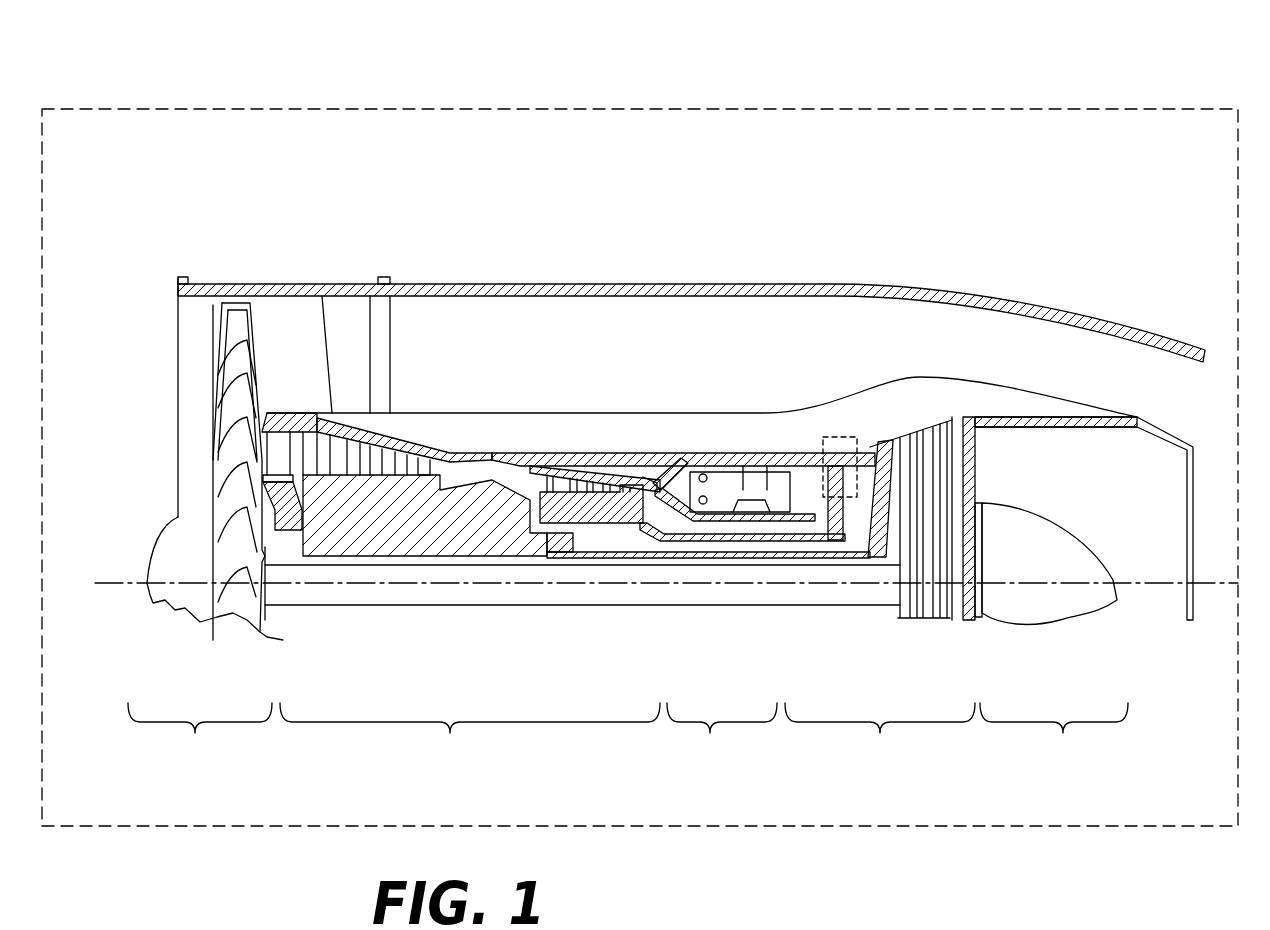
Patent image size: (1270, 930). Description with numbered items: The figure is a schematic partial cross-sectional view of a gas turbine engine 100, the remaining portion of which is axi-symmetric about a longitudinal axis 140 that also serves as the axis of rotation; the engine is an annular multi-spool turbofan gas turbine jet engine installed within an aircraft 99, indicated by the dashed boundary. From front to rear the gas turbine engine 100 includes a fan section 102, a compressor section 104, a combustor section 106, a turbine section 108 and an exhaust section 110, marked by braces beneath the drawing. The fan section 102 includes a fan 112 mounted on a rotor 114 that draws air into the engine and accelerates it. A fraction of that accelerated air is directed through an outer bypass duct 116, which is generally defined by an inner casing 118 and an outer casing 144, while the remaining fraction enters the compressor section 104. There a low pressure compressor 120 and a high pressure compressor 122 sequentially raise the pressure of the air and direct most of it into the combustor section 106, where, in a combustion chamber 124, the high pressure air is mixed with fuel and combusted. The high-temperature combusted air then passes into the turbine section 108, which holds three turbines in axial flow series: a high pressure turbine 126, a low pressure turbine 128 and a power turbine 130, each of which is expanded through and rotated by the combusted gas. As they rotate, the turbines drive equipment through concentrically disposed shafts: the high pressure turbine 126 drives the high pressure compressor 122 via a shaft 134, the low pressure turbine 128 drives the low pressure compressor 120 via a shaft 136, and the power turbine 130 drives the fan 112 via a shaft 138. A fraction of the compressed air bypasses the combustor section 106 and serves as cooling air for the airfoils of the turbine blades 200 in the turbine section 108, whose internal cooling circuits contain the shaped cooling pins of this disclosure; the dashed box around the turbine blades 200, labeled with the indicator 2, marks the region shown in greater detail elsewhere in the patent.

The aircraft 99 is at (1128, 109).
The gas turbine engine 100 is at (416, 227).
The fan section 102 is at (200, 739).
The compressor section 104 is at (470, 739).
The combustor section 106 is at (722, 739).
The turbine section 108 is at (880, 739).
The exhaust section 110 is at (1054, 739).
The fan 112 is at (233, 413).
The rotor 114 is at (270, 626).
The outer bypass duct 116 is at (577, 312).
The inner casing 118 is at (462, 414).
The low pressure compressor 120 is at (382, 550).
The high pressure compressor 122 is at (590, 524).
The combustion chamber 124 is at (789, 455).
The high pressure turbine 126 is at (826, 484).
The low pressure turbine 128 is at (894, 448).
The power turbine 130 is at (952, 507).
The shaft 134 is at (690, 543).
The shaft 136 is at (778, 559).
The shaft 138 is at (870, 595).
The longitudinal axis 140 is at (150, 583).
The outer casing 144 is at (688, 284).
The turbine blades 200 is at (851, 437).
The FIG. 2 detail indicator 2 is at (838, 436).